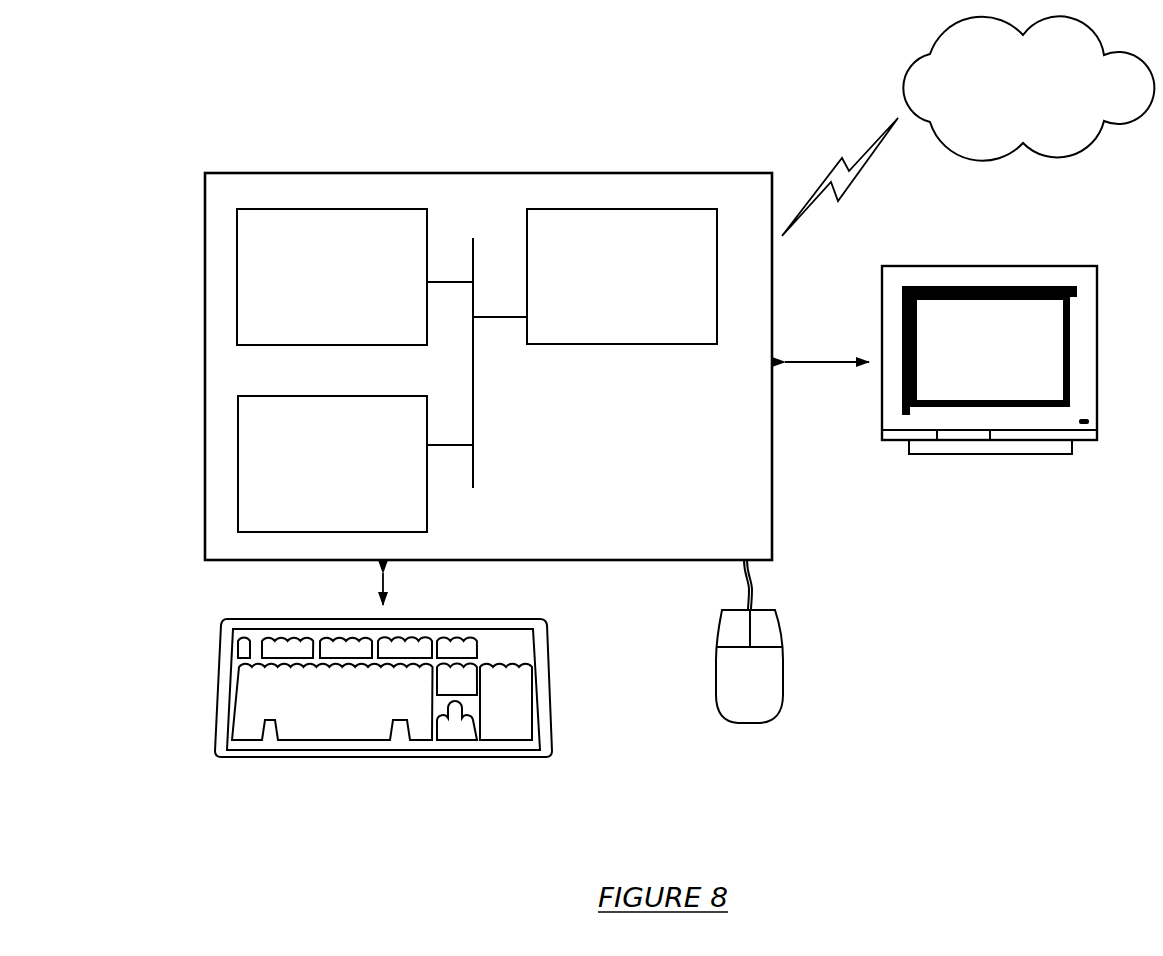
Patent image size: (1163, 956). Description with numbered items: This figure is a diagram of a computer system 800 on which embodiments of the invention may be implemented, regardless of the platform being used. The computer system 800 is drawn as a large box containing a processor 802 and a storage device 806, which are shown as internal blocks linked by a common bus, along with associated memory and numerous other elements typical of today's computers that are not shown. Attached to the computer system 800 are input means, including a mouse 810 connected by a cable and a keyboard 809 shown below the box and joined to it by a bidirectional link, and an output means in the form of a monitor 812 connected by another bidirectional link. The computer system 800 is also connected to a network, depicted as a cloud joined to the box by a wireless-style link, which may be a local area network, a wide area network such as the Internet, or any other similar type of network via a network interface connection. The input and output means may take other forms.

The computer system 800 is at (258, 167).
The processor 802 is at (607, 288).
The storage device 806 is at (312, 476).
The keyboard 809 is at (309, 723).
The mouse 810 is at (732, 684).
The monitor 812 is at (969, 354).